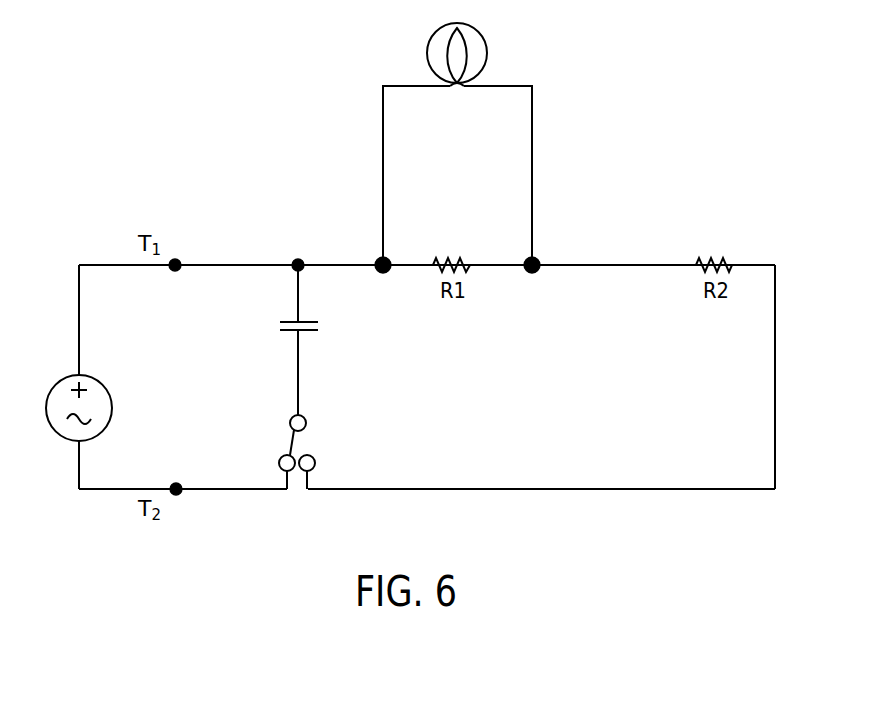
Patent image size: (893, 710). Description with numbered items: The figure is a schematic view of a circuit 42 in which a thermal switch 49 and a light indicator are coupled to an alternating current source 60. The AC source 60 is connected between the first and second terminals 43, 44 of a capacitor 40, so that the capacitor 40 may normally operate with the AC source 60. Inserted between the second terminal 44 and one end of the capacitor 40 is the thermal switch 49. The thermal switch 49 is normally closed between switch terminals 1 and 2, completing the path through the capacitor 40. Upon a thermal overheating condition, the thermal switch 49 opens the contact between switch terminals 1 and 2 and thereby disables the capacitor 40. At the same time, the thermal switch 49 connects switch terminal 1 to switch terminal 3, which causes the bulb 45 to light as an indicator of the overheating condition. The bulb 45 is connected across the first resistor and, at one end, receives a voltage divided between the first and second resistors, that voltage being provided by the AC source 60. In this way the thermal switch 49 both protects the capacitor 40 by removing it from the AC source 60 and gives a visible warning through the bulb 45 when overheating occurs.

The capacitor 40 is at (322, 330).
The circuit 42 is at (210, 141).
The terminal T1 43 is at (175, 259).
The terminal T2 44 is at (176, 496).
The bulb 45 is at (428, 51).
The thermal switch 49 is at (311, 432).
The alternating current source 60 is at (57, 385).
The switch terminal 1 is at (289, 423).
The switch terminal 2 is at (278, 463).
The switch terminal 3 is at (318, 463).